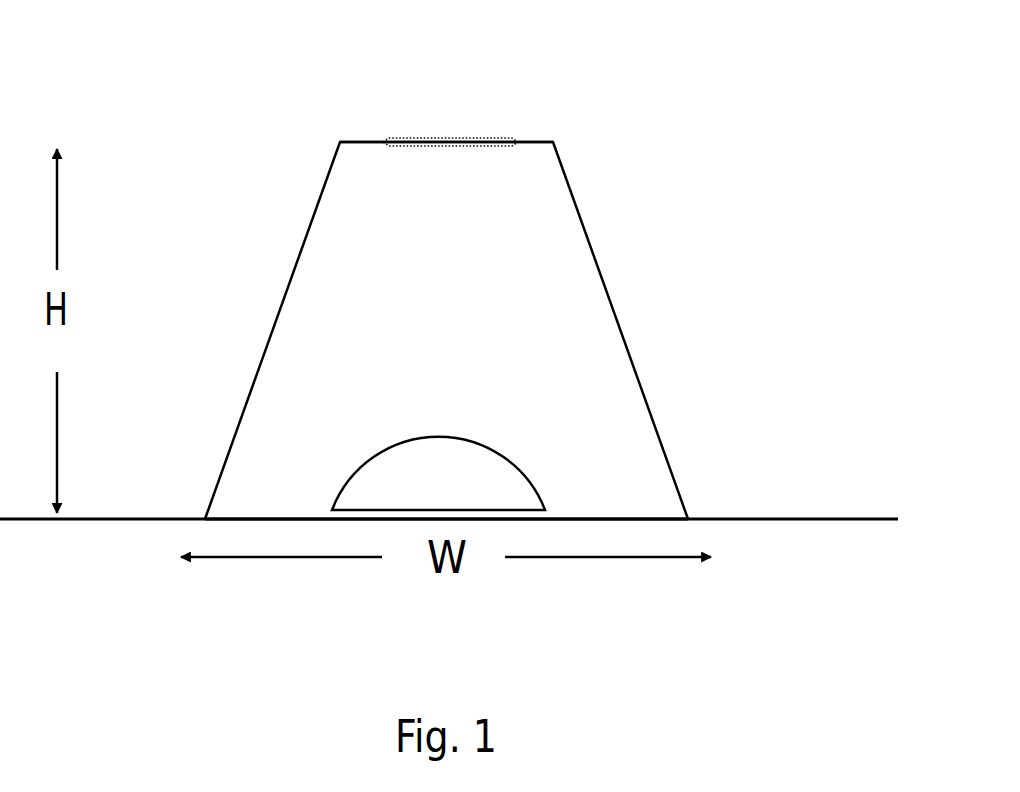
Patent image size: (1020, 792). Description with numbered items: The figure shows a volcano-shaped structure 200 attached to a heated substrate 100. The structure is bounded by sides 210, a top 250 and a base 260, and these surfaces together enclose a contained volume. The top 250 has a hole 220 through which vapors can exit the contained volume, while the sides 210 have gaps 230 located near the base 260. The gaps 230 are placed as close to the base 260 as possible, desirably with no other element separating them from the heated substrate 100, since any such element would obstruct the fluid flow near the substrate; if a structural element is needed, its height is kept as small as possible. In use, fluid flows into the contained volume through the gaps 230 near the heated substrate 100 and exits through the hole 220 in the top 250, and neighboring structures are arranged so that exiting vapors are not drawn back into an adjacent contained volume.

The heated substrate 100 is at (804, 508).
The trapezoidal body 200 is at (592, 225).
The sides 210 is at (527, 370).
The hole 220 is at (462, 114).
The gaps 230 is at (546, 486).
The top 250 is at (357, 136).
The base 260 is at (308, 508).